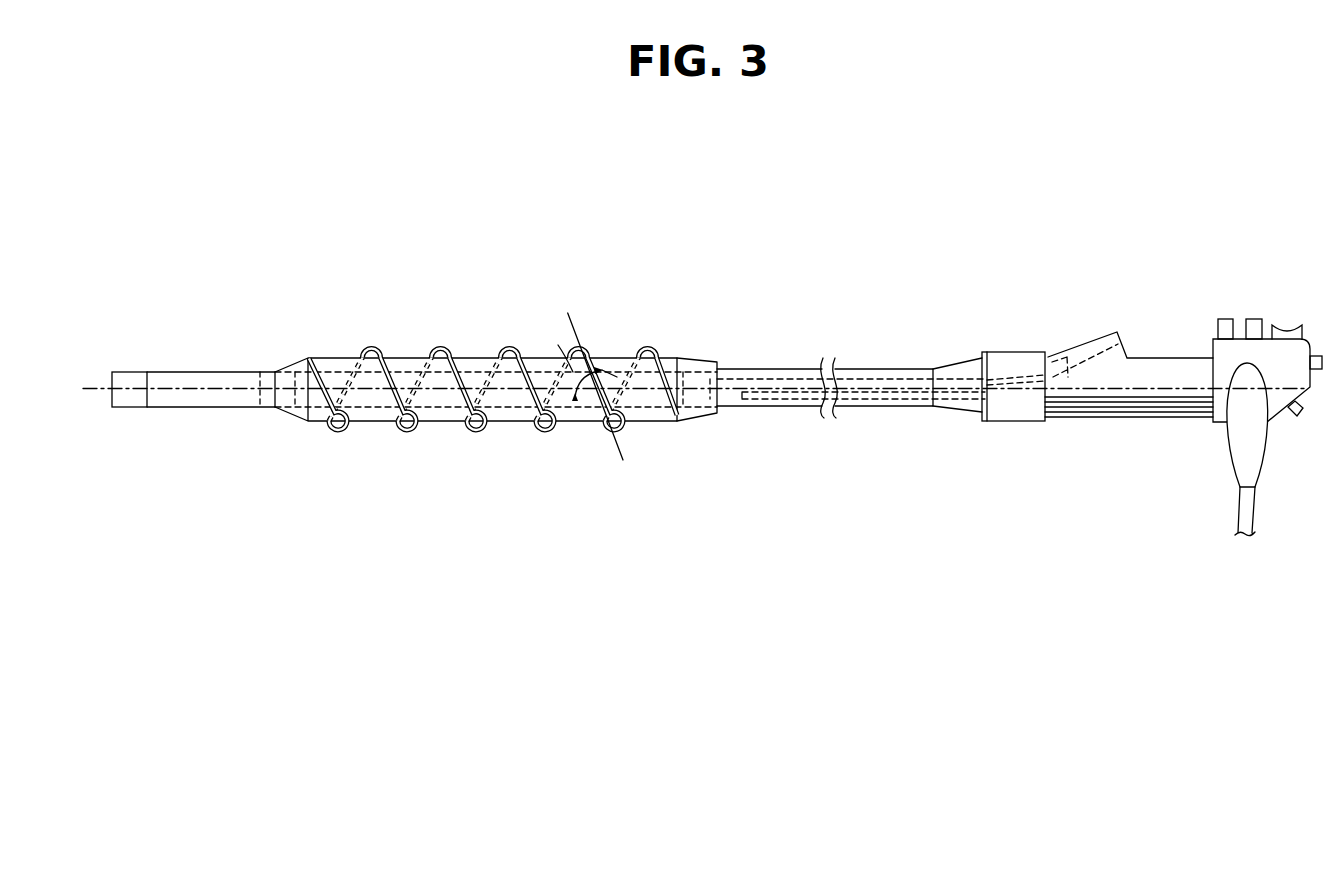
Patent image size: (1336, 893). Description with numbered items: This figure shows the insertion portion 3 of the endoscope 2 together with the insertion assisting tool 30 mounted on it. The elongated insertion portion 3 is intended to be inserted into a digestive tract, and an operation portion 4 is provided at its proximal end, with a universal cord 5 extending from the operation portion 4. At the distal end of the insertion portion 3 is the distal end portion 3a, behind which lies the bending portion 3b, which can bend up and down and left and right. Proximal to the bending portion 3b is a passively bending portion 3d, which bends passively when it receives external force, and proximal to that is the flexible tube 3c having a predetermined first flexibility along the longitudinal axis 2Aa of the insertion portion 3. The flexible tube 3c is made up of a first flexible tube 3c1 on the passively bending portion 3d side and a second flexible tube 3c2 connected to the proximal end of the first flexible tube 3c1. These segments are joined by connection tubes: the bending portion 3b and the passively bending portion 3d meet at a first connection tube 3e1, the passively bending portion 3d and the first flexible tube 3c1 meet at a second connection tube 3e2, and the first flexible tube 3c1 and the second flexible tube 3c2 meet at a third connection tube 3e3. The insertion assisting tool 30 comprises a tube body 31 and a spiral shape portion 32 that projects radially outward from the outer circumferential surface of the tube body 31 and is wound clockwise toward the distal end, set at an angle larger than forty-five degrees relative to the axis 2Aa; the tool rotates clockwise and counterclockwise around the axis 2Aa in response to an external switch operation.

The endoscope 2 is at (662, 402).
The axis 2Aa is at (90, 390).
The insertion portion 3 is at (548, 414).
The distal end portion 3a is at (132, 399).
The bending portion 3b is at (215, 399).
The flexible tube 3c is at (772, 409).
The first flexible tube 3c1 is at (592, 422).
The second flexible tube 3c2 is at (848, 427).
The passively bending portion 3d is at (496, 391).
The first connection tube 3e1 is at (270, 410).
The second connection tube 3e2 is at (473, 357).
The third connection tube 3e3 is at (693, 355).
The insertion assisting tool 30 is at (493, 338).
The tube body 31 is at (408, 365).
The spiral shape portion 32 is at (370, 346).
The operation portion 4 is at (1194, 355).
The universal cord 5 is at (1247, 515).